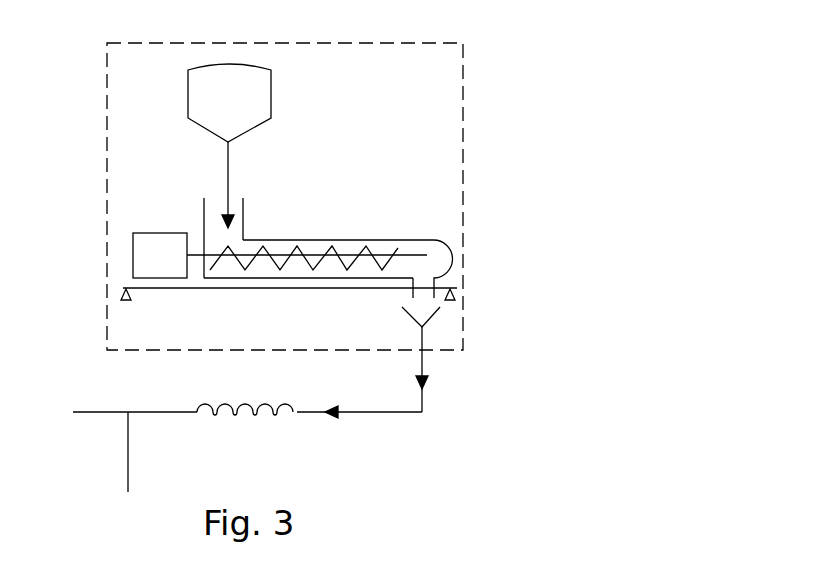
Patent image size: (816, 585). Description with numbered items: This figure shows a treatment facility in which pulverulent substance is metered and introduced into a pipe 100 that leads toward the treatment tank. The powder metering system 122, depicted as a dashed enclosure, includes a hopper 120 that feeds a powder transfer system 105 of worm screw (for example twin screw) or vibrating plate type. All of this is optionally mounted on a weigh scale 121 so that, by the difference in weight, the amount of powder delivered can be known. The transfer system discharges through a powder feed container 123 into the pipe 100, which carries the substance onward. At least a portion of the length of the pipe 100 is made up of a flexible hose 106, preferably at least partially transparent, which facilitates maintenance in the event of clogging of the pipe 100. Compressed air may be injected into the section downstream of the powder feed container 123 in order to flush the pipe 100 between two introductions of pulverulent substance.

The pipe 100 is at (95, 412).
The powder transfer system 105 is at (382, 248).
The flexible hose 106 is at (250, 406).
The hopper 120 is at (189, 81).
The weigh scale 121 is at (180, 290).
The powder metering system 122 is at (463, 167).
The powder feed container 123 is at (440, 310).